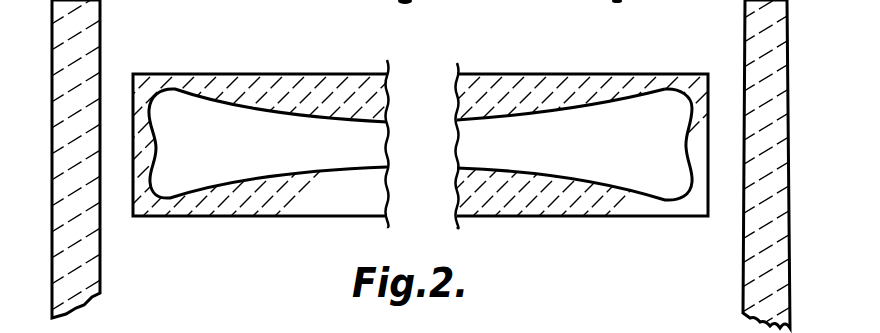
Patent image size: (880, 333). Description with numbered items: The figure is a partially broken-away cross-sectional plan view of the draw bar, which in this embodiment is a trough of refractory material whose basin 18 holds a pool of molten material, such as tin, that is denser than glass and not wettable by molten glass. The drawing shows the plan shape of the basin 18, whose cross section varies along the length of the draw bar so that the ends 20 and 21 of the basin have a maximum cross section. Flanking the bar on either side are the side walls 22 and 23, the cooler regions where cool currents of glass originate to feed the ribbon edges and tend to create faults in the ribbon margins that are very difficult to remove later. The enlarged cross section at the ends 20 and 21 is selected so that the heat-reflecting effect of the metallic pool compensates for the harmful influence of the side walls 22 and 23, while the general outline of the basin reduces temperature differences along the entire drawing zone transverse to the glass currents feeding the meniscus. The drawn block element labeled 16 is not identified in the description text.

The die block 16 is at (530, 88).
The basin 18 is at (494, 121).
The end of the basin 20 is at (638, 157).
The end of the basin 21 is at (229, 157).
The side wall 22 is at (83, 67).
The side wall 23 is at (762, 62).